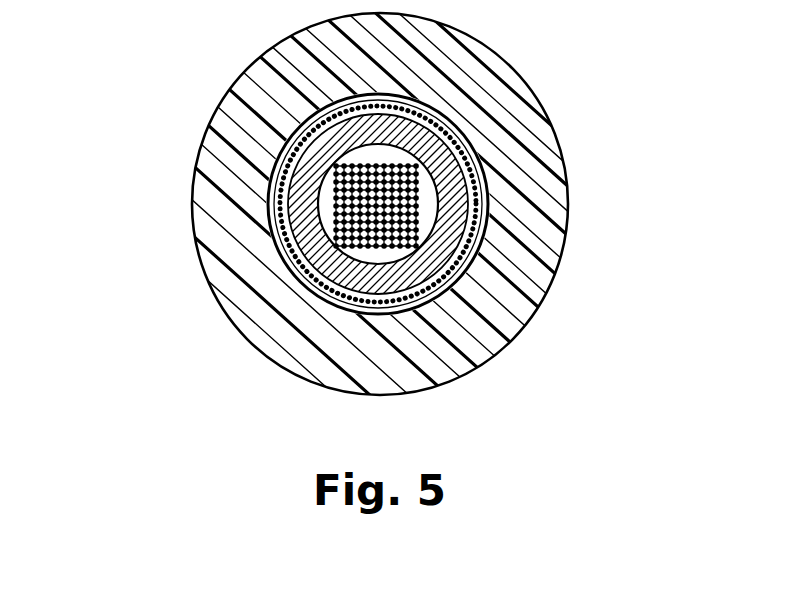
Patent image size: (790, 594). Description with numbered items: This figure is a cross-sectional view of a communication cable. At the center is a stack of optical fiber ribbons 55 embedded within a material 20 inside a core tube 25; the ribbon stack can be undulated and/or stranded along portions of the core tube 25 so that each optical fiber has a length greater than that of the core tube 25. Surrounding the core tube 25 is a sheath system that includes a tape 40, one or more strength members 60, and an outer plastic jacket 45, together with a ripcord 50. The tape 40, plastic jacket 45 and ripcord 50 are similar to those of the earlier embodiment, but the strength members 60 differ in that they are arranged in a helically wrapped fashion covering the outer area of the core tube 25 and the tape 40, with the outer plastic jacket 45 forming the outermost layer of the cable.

The material 20 is at (428, 220).
The core tube 25 is at (462, 260).
The tape 40 is at (453, 283).
The outer plastic jacket 45 is at (227, 147).
The ripcord 50 is at (287, 200).
The stack of optical fiber ribbons 55 is at (415, 187).
The strength members 60 is at (277, 245).